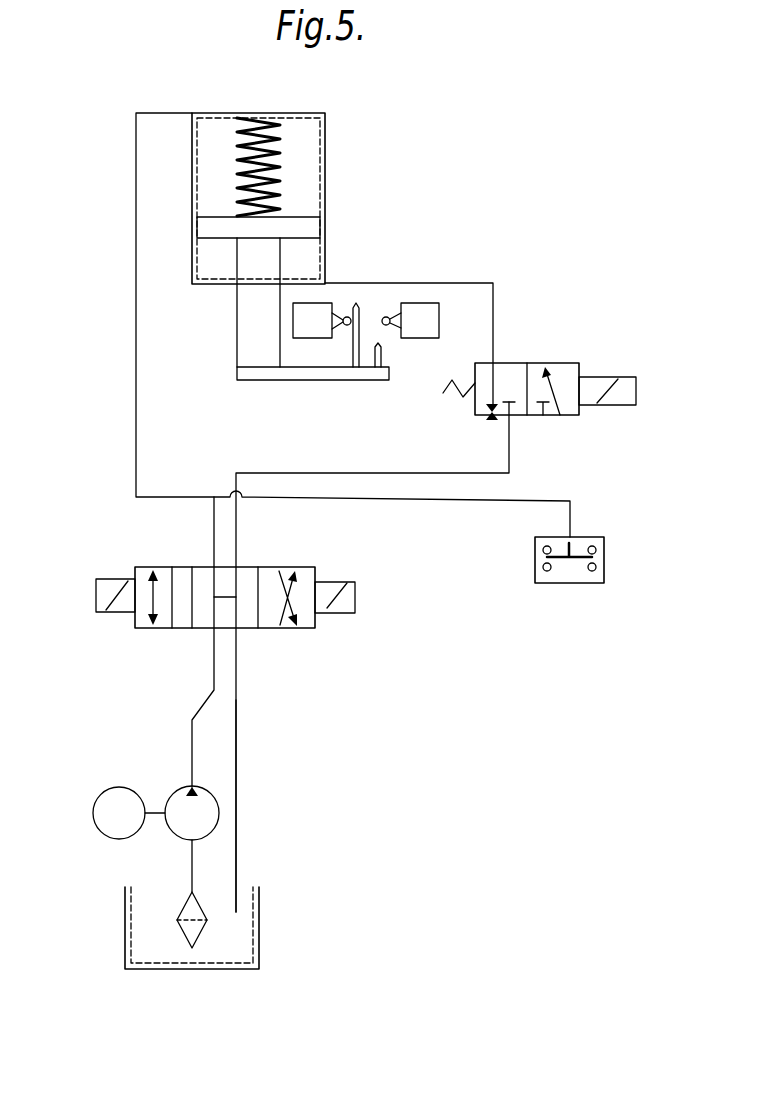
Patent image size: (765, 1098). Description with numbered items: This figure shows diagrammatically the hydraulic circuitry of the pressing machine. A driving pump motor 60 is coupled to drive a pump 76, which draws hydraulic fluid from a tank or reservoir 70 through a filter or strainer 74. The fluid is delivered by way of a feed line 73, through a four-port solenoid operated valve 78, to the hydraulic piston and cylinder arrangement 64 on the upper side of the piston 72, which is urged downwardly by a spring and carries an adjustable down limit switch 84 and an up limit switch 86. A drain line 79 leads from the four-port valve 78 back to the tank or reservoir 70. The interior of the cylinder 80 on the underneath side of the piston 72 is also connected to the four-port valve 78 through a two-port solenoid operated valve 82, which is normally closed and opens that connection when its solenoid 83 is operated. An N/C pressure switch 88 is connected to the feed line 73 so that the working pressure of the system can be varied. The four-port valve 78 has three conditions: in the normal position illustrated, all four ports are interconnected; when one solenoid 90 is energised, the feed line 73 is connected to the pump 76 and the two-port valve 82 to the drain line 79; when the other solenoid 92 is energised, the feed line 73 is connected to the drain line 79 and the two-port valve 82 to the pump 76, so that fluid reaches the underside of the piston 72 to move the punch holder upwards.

The driving pump motor 60 is at (92, 808).
The hydraulic piston and cylinder arrangement 64 is at (338, 202).
The tank or reservoir 70 is at (260, 927).
The piston 72 is at (310, 228).
The feed line 73 is at (136, 195).
The filter or strainer 74 is at (175, 920).
The pump 76 is at (177, 790).
The four-port solenoid operated valve 78 is at (268, 636).
The drain line 79 is at (237, 743).
The cylinder 80 is at (327, 125).
The two-port solenoid operated valve 82 is at (560, 359).
The solenoid 83 is at (617, 400).
The adjustable down limit switch 84 is at (310, 323).
The up limit switch 86 is at (439, 316).
The N/C pressure switch 88 is at (598, 559).
The solenoid 90 is at (103, 593).
The solenoid 92 is at (348, 601).